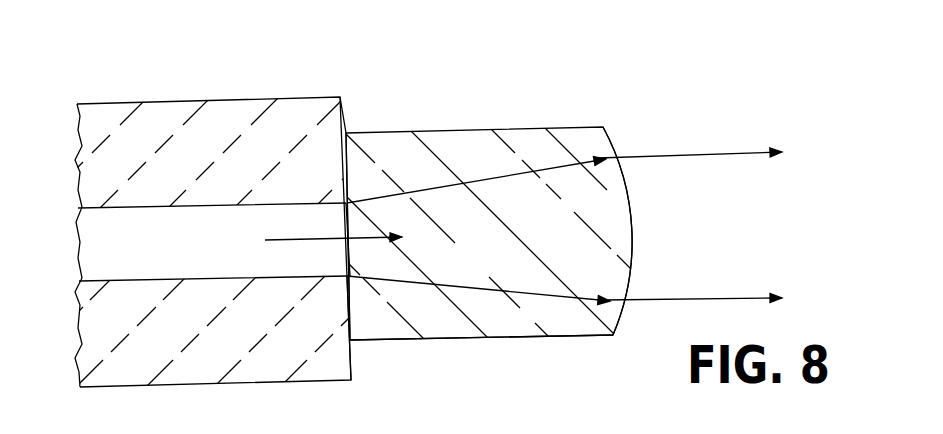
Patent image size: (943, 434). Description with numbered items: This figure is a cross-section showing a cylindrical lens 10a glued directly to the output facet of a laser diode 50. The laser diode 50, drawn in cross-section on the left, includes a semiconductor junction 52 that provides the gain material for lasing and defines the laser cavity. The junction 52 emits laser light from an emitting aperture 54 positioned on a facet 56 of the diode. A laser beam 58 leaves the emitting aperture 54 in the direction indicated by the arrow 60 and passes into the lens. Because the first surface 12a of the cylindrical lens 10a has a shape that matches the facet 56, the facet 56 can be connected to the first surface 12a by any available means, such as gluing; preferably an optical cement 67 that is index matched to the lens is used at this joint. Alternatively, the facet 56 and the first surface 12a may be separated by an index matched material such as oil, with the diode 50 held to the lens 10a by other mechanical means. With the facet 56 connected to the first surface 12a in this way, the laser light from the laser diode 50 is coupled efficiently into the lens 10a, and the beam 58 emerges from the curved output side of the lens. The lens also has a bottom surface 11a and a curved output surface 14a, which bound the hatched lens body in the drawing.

The laser diode 50 is at (255, 98).
The semiconductor junction 52 is at (202, 253).
The emitting aperture 54 is at (345, 262).
The facet 56 is at (370, 138).
The laser beam 58 is at (570, 236).
The arrow 60 is at (313, 240).
The cylindrical lens 10a is at (512, 108).
The lens bottom surface 11a is at (517, 340).
The first surface 12a is at (348, 315).
The curved output surface 14a is at (613, 147).
The optical cement 67 is at (350, 310).